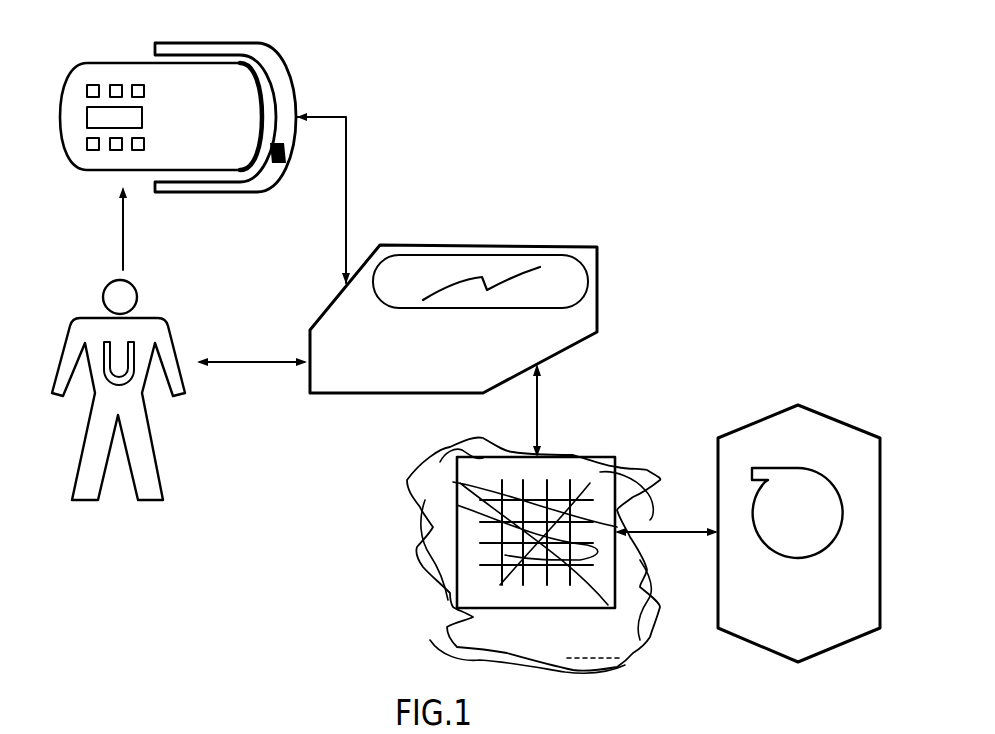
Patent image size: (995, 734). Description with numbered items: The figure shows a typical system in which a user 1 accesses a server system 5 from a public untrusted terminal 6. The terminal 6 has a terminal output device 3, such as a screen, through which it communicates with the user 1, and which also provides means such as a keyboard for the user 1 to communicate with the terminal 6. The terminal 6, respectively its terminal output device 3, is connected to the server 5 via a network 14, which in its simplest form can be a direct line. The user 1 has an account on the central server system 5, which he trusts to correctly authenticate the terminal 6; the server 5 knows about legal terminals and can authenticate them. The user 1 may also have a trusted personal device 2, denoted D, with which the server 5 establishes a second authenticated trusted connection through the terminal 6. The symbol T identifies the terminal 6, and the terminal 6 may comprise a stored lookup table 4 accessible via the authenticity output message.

The user 1 is at (148, 480).
The trusted personal device 2 is at (128, 72).
The terminal output device 3 is at (592, 260).
The stored lookup table 4 is at (272, 165).
The server system 5 is at (822, 443).
The terminal 6 is at (290, 93).
The network 14 is at (475, 583).
The terminal symbol T is at (278, 67).